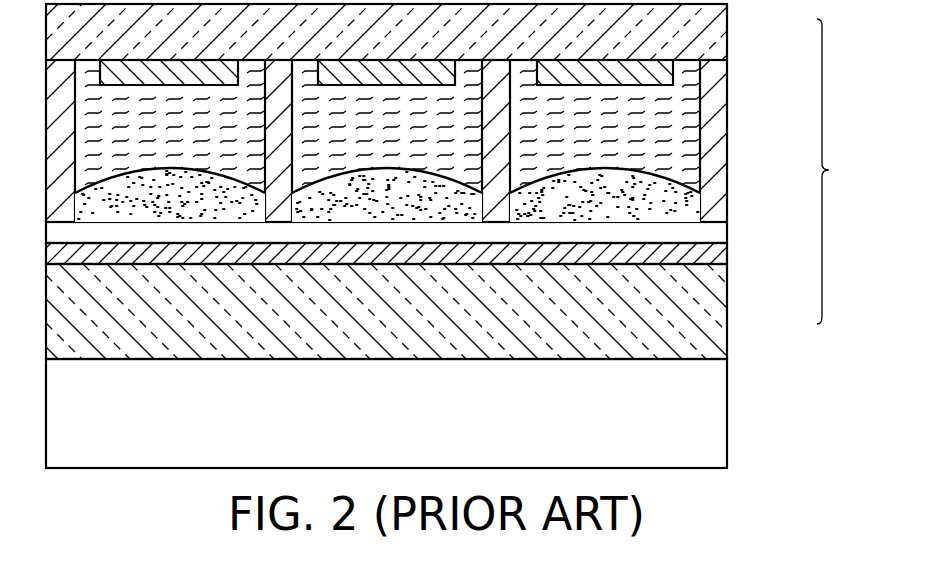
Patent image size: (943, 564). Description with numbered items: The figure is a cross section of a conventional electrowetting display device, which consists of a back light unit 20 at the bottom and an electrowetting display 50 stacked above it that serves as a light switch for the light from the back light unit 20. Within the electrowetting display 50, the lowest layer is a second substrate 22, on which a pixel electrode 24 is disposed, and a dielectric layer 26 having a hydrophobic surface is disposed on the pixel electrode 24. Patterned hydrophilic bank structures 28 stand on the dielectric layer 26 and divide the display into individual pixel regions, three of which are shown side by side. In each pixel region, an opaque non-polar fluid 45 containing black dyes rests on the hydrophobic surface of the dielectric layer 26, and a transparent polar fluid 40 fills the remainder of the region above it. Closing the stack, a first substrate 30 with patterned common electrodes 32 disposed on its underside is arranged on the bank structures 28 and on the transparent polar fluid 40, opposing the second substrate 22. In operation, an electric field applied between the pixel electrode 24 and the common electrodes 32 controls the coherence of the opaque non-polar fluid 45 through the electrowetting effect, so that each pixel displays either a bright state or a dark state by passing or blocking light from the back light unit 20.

The back light unit 20 is at (713, 413).
The second substrate 22 is at (713, 310).
The pixel electrode 24 is at (713, 253).
The dielectric layer 26 is at (714, 232).
The hydrophilic bank structures 28 is at (712, 140).
The first substrate 30 is at (712, 30).
The patterned common electrodes 32 is at (660, 73).
The transparent polar fluid 40 is at (686, 112).
The opaque non-polar fluid 45 is at (690, 208).
The electrowetting display 50 is at (839, 171).